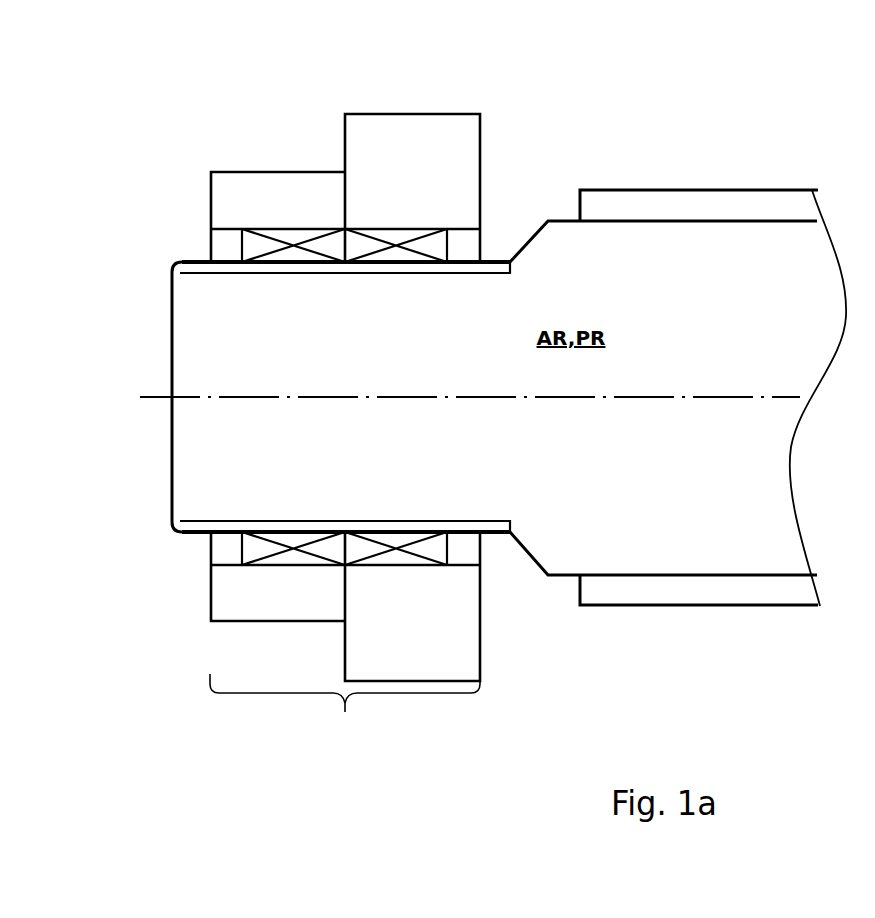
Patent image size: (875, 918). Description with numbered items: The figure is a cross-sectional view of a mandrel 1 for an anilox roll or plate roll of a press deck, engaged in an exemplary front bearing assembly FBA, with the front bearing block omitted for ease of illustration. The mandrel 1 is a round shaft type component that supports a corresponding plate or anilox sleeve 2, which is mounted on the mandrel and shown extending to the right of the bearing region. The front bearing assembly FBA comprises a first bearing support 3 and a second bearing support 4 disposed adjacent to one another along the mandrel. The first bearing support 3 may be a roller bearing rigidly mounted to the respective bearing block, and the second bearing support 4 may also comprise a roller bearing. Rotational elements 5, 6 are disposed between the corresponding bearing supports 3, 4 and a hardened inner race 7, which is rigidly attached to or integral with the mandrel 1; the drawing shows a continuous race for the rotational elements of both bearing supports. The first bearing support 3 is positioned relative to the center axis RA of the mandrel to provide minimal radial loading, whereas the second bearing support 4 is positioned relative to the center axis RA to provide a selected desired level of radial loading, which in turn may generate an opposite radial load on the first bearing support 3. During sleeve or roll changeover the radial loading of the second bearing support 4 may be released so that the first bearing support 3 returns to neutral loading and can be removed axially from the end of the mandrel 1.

The mandrel 1 is at (170, 329).
The plate or anilox sleeve 2 is at (680, 186).
The first bearing support 3 is at (419, 112).
The second bearing support 4 is at (297, 166).
The rotational element 5 is at (431, 225).
The rotational element 6 is at (265, 226).
The hardened inner race 7 is at (188, 254).
The center axis RA is at (452, 396).
The front bearing assembly FBA is at (345, 710).